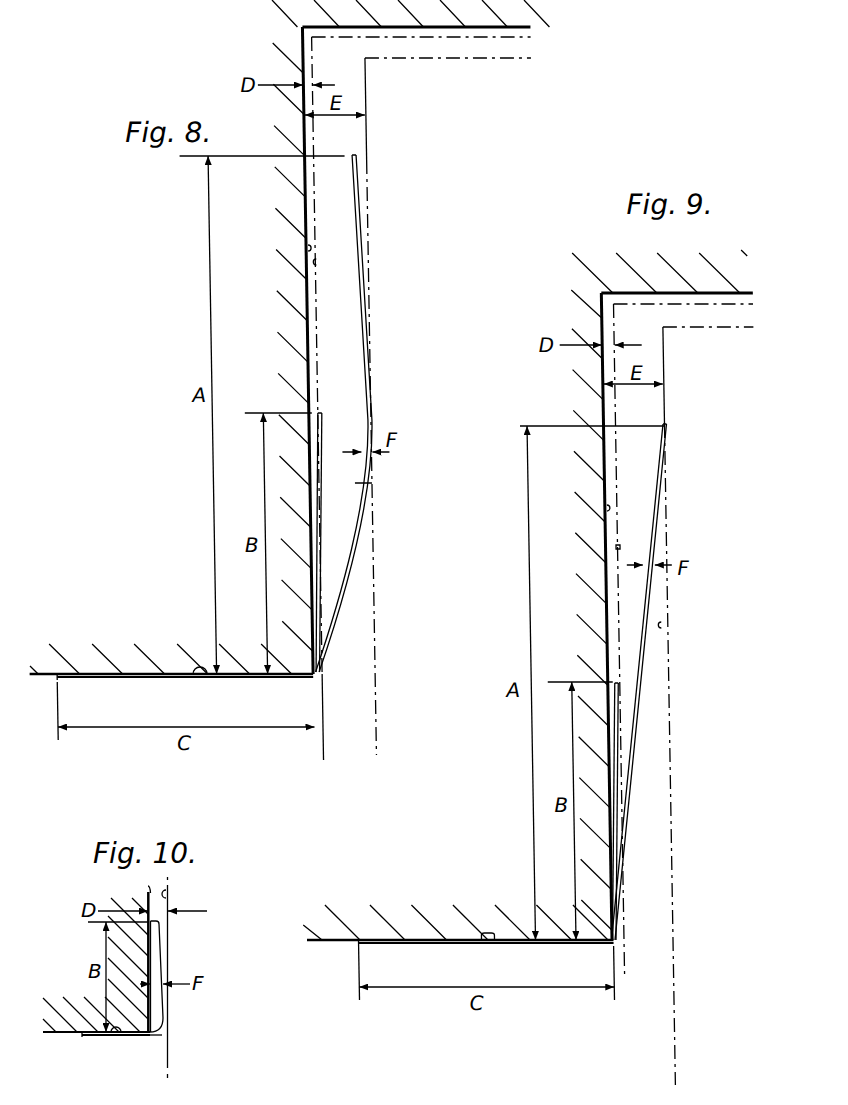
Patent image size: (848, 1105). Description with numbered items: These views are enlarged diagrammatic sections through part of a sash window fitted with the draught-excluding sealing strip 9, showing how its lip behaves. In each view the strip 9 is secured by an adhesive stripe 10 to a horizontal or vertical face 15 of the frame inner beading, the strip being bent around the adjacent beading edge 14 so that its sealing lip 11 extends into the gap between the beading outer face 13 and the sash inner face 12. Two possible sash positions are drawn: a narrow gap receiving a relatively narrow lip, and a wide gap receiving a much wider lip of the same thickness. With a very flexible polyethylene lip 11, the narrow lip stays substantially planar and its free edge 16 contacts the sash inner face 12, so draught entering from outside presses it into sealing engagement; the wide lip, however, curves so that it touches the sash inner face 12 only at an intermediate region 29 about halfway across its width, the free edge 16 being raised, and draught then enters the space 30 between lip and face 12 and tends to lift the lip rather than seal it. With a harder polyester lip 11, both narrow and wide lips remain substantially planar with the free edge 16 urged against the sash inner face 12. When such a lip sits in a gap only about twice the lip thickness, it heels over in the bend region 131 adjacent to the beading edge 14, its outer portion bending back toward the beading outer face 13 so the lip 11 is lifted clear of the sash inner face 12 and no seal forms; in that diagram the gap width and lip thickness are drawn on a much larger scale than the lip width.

In FIG. 8, the sealing strip 9 is at (156, 679).
In FIG. 9, the sealing strip 9 is at (417, 944).
In FIG. 10, the sealing strip 9 is at (92, 1038).
In FIG. 8, the adhesive stripe 10 is at (189, 676).
In FIG. 9, the adhesive stripe 10 is at (474, 946).
In FIG. 10, the adhesive stripe 10 is at (118, 1034).
In FIG. 8, the sealing lip 11 is at (326, 413).
In FIG. 9, the sealing lip 11 is at (646, 493).
In FIG. 10, the sealing lip 11 is at (158, 945).
In FIG. 8, the sash inner face 12 is at (314, 262).
In FIG. 9, the sash inner face 12 is at (611, 548).
In FIG. 10, the sash inner face 12 is at (170, 889).
In FIG. 8, the beading outer face 13 is at (304, 248).
In FIG. 9, the beading outer face 13 is at (594, 503).
In FIG. 10, the beading outer face 13 is at (148, 886).
In FIG. 10, the beading edge 14 is at (158, 1038).
In FIG. 8, the face of inner beading 15 is at (35, 672).
In FIG. 9, the face of inner beading 15 is at (318, 939).
In FIG. 10, the face of inner beading 15 is at (47, 1030).
In FIG. 8, the free edge of the lip 16 is at (352, 155).
In FIG. 9, the free edge of the lip 16 is at (660, 424).
In FIG. 8, the intermediate region 29 is at (366, 383).
In FIG. 8, the space 30 is at (362, 175).
In FIG. 10, the rounded lower edge of panel 131 is at (164, 1030).